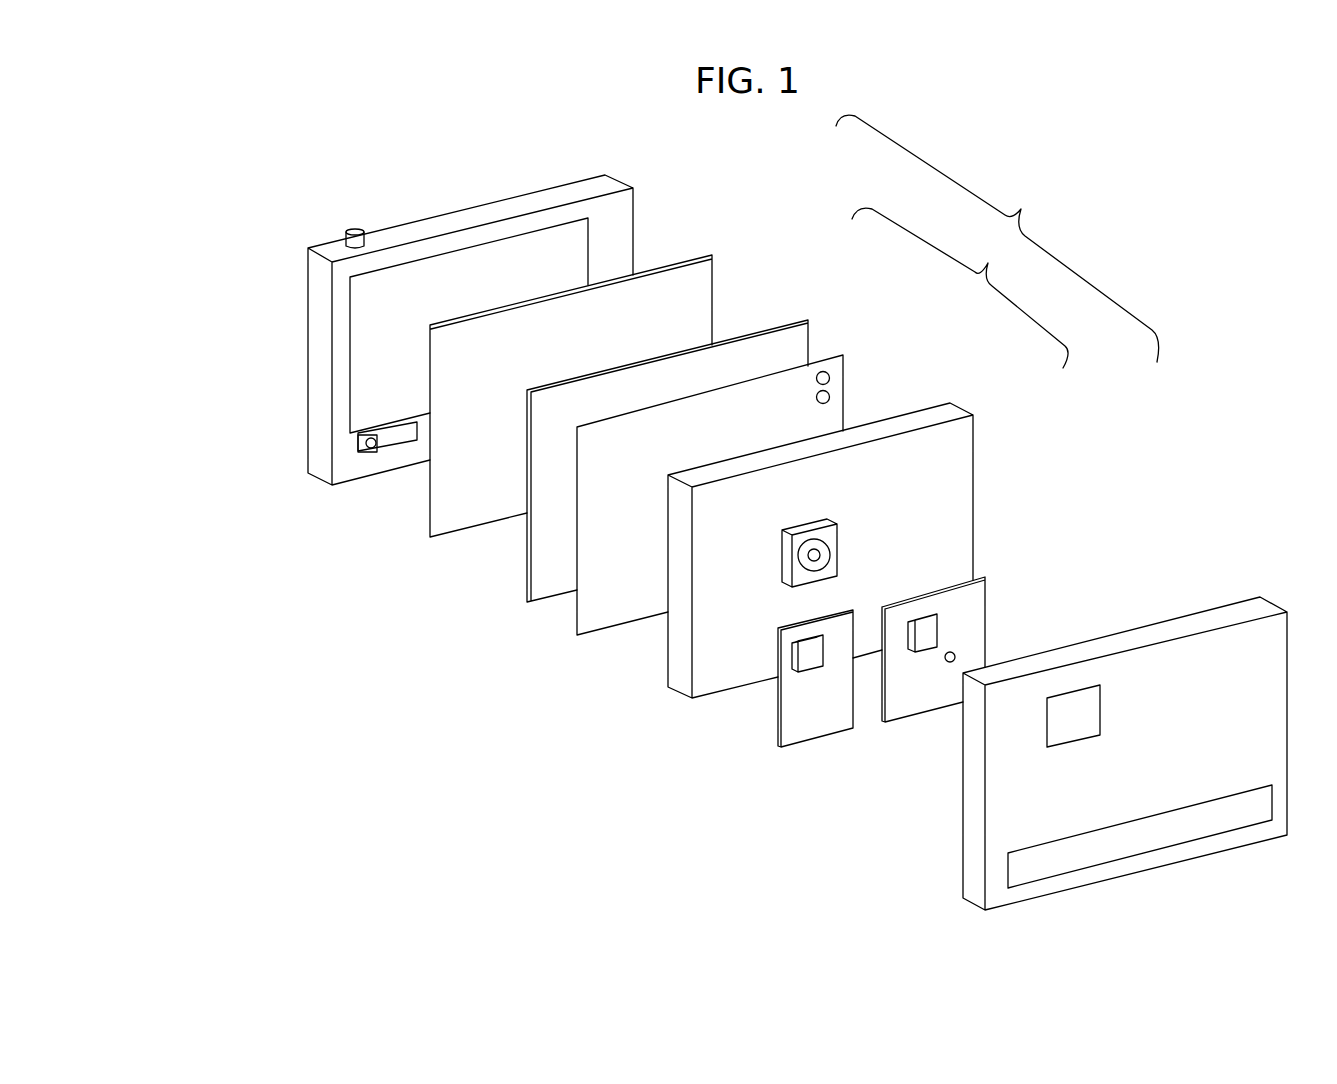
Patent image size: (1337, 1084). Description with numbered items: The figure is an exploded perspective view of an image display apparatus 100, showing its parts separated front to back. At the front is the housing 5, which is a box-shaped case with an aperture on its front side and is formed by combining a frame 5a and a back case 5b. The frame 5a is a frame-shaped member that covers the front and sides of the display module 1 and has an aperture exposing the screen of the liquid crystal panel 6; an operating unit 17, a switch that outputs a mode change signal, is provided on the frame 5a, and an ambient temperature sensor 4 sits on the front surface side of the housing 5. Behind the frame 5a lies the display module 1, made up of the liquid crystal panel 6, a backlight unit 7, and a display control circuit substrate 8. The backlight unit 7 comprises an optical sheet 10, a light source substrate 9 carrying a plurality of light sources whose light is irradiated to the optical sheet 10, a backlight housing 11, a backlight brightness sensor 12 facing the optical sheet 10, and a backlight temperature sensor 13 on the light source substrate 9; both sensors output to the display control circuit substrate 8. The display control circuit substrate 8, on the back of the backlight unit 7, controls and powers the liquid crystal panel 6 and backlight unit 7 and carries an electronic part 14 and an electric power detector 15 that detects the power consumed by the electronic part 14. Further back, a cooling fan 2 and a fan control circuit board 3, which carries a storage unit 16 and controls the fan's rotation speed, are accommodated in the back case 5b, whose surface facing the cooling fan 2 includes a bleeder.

The image display apparatus 100 is at (384, 137).
The display module 1 is at (997, 238).
The cooling fan 2 is at (782, 572).
The fan control circuit board 3 is at (778, 738).
The ambient temperature sensor 4 is at (372, 451).
The housing 5 is at (872, 870).
The frame 5a is at (308, 366).
The back case 5b is at (958, 837).
The liquid crystal panel 6 is at (713, 282).
The backlight unit 7 is at (960, 288).
The display control circuit substrate 8 is at (940, 630).
The light source substrate 9 is at (846, 356).
The optical sheet 10 is at (810, 330).
The backlight housing 11 is at (968, 411).
The backlight brightness sensor 12 is at (830, 377).
The backlight temperature sensor 13 is at (830, 396).
The electronic part 14 is at (938, 632).
The electric power detector 15 is at (955, 657).
The storage unit 16 is at (812, 657).
The operating unit 17 is at (355, 229).